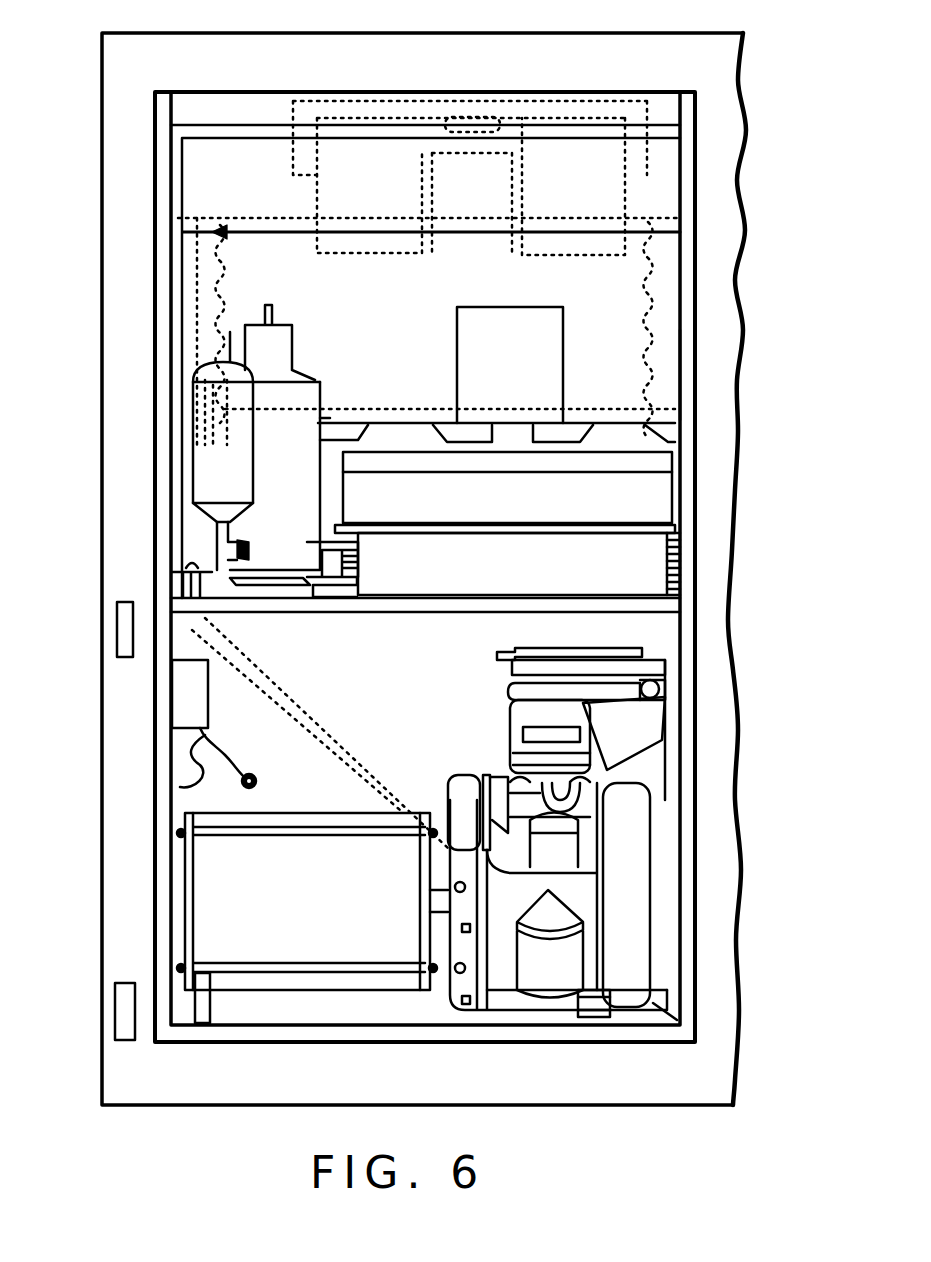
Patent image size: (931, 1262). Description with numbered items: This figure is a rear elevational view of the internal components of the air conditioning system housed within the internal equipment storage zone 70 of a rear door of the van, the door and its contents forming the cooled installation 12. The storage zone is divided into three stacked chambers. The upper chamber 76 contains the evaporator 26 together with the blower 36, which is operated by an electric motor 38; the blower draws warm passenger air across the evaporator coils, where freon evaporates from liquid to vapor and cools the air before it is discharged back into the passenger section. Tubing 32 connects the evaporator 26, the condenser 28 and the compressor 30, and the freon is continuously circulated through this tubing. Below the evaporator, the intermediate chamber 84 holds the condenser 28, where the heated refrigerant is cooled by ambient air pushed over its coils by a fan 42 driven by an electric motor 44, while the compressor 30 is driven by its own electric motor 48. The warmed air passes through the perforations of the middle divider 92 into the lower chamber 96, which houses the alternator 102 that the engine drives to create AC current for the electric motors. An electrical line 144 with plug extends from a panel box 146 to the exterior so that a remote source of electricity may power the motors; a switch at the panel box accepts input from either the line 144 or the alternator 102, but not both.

The refrigerator cabinet 12 is at (758, 206).
The evaporator 26 is at (657, 265).
The condenser 28 is at (678, 548).
The compressor 30 is at (235, 548).
The tubing 32 is at (222, 572).
The blower 36 is at (572, 177).
The electric motor 38 is at (497, 173).
The fan 42 is at (653, 488).
The electric motor 44 is at (530, 343).
The electric motor 48 is at (305, 470).
The internal equipment storage zone 70 is at (706, 369).
The upper chamber 76 is at (196, 287).
The intermediate chamber 84 is at (185, 546).
The middle divider 92 is at (659, 613).
The lower chamber 96 is at (666, 641).
The alternator 102 is at (215, 912).
The electrical line 144 is at (200, 783).
The panel box 146 is at (190, 718).